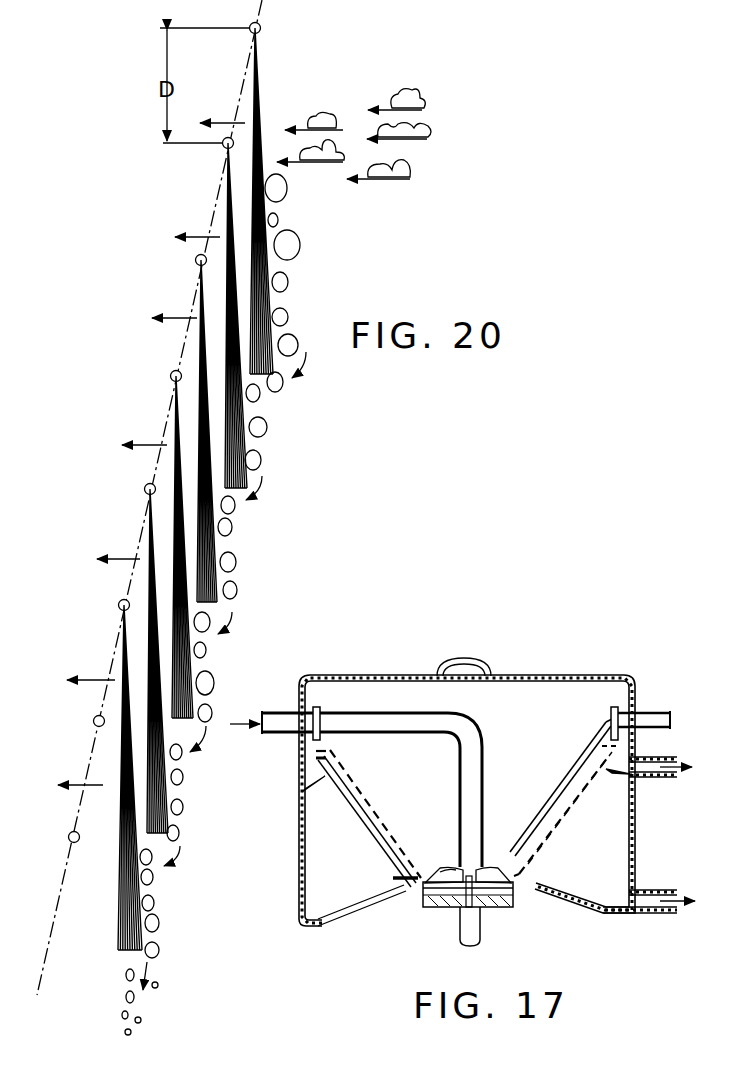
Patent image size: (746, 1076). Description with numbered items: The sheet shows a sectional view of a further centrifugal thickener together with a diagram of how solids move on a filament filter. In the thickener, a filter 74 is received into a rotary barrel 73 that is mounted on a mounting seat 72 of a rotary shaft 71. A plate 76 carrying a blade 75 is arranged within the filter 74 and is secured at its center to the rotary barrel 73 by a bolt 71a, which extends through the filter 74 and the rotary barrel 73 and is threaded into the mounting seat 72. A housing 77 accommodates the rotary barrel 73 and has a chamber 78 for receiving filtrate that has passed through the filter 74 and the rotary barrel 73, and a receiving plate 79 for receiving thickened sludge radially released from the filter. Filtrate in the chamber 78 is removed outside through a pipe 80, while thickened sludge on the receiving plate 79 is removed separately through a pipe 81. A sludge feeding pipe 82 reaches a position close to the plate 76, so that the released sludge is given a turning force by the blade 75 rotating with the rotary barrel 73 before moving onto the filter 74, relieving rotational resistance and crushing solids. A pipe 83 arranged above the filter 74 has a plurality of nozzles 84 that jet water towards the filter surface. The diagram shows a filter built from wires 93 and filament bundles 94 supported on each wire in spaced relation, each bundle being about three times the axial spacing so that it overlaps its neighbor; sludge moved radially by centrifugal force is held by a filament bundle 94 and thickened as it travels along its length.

In FIG. 17, the rotary shaft 71 is at (477, 936).
In FIG. 17, the bolt 71a is at (449, 866).
In FIG. 17, the mounting seat 72 is at (505, 908).
In FIG. 20, the rotary barrel 73 is at (63, 876).
In FIG. 17, the rotary barrel 73 is at (360, 803).
In FIG. 17, the filter 74 is at (363, 793).
In FIG. 17, the blade 75 is at (418, 886).
In FIG. 17, the plate 76 is at (490, 866).
In FIG. 17, the housing 77 is at (299, 849).
In FIG. 17, the chamber 78 is at (596, 866).
In FIG. 17, the receiving plate 79 is at (320, 782).
In FIG. 17, the pipe 80 is at (650, 897).
In FIG. 17, the pipe 81 is at (640, 780).
In FIG. 17, the pipe 82 is at (394, 718).
In FIG. 17, the pipe 83 is at (570, 768).
In FIG. 17, the nozzles 84 is at (550, 810).
In FIG. 20, the wires 93 is at (261, 27).
In FIG. 20, the filament bundles 94 is at (260, 101).